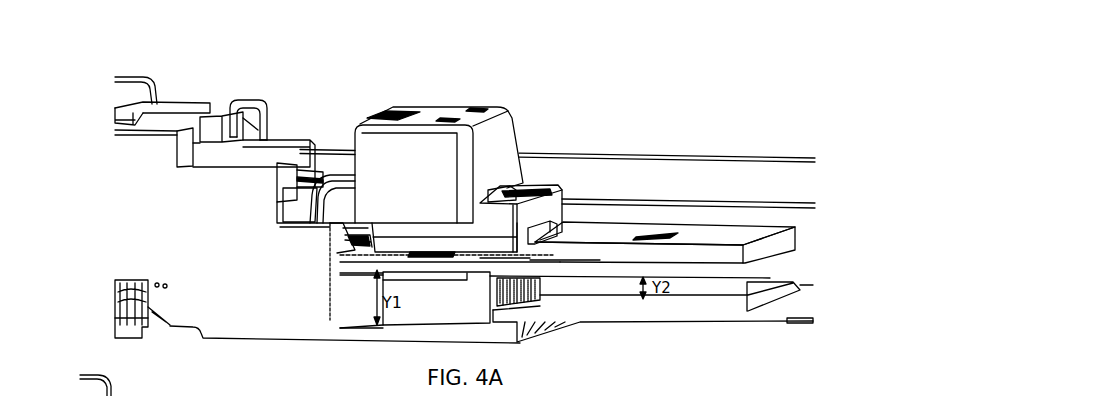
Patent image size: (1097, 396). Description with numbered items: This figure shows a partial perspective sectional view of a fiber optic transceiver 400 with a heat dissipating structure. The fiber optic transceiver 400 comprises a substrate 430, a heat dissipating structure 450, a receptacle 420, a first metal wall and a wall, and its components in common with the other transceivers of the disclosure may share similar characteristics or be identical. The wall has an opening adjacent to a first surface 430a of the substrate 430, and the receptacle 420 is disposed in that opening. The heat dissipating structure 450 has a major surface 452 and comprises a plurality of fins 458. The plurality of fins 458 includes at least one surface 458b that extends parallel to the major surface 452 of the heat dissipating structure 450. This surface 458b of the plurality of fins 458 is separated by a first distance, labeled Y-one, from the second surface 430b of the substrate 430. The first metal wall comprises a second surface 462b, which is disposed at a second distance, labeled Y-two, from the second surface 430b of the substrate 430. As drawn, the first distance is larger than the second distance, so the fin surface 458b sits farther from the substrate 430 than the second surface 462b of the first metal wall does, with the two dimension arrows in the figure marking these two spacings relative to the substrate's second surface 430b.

The fiber optic transceiver 400 is at (87, 69).
The receptacle 420 is at (348, 211).
The substrate 430 is at (347, 266).
The first surface 430a is at (793, 252).
The second surface 430b is at (770, 278).
The heat dissipating structure 450 is at (375, 292).
The major surface 452 is at (430, 275).
The plurality of fins 458 is at (540, 288).
The surface of the plurality of fins 458b is at (405, 320).
The second surface 462b is at (617, 299).